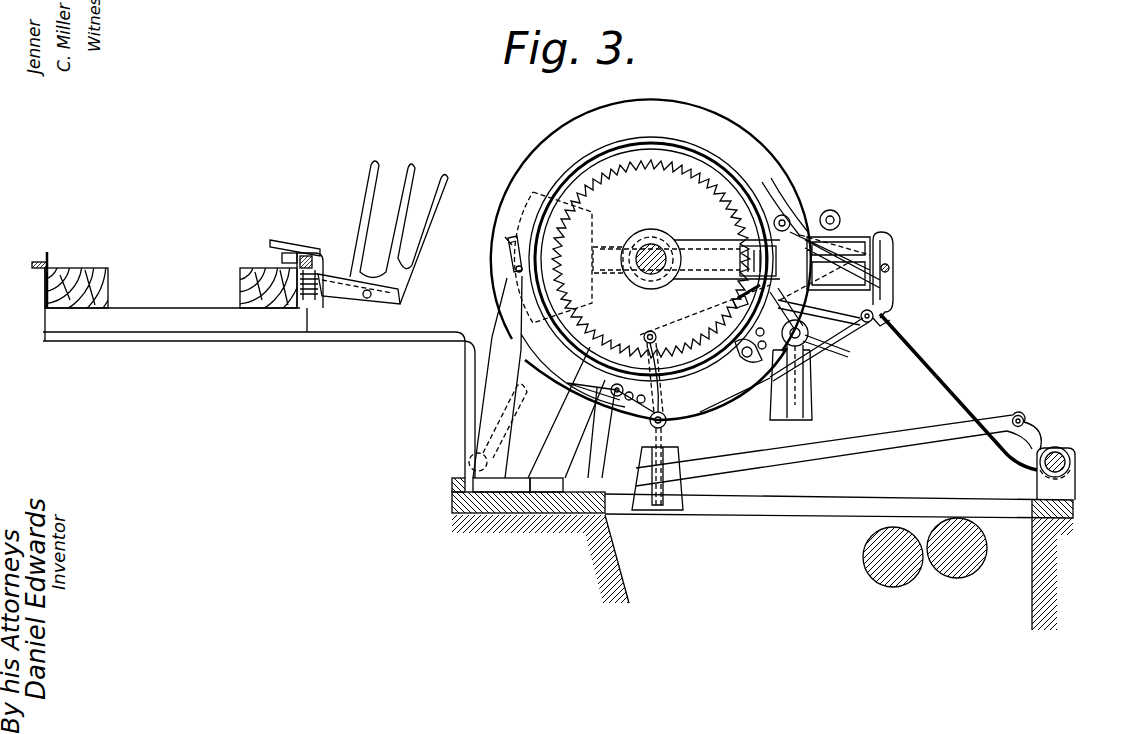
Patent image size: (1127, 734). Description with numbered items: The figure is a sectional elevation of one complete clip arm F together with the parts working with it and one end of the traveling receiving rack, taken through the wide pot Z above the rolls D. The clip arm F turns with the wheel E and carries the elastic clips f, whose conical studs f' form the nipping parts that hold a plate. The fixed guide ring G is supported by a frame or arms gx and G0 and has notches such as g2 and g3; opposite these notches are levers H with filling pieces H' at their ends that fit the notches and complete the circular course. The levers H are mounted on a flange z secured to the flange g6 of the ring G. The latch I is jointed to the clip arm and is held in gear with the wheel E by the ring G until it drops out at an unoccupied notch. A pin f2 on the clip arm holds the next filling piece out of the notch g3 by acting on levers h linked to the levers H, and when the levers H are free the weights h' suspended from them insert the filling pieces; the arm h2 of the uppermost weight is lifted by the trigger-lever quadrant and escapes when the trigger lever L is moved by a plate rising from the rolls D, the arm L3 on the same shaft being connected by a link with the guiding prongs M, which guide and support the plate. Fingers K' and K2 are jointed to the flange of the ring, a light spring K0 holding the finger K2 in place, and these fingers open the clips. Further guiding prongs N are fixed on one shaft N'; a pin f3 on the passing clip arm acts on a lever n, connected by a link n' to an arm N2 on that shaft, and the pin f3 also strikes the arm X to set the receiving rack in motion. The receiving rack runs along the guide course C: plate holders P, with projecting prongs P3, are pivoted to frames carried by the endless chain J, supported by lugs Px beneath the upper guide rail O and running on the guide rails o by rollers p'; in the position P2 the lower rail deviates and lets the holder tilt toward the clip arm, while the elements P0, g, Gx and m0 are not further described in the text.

The guide course C is at (171, 294).
The guide rail o is at (45, 298).
The endless chain J is at (290, 310).
The rollers p' is at (298, 270).
The guide rail O is at (320, 258).
The projecting lugs Px is at (326, 266).
The plate holders P is at (383, 235).
The pivot P0 is at (367, 290).
The plate holder position P2 is at (383, 217).
The projecting prongs P3 is at (420, 216).
The fixed guide ring G is at (651, 225).
The ring g is at (655, 146).
The flange g6 is at (636, 157).
The flange z is at (728, 128).
The wheel E is at (651, 259).
The clip arm F is at (705, 245).
The latch I is at (758, 261).
The finger K2 is at (508, 243).
The light spring K0 is at (516, 270).
The finger K' is at (785, 207).
The arm of the uppermost weight h2 is at (840, 222).
The levers H is at (677, 324).
The filling pieces H' is at (643, 398).
The notch g2 is at (590, 368).
The notch g3 is at (745, 345).
The frame or arms gx is at (497, 377).
The arm X is at (503, 427).
The post Gx is at (566, 412).
The frame or arms G0 is at (652, 472).
The levers h is at (758, 397).
The lever n is at (778, 310).
The pin f2 is at (738, 298).
The pin f3 is at (851, 261).
The clips f is at (892, 275).
The conical studs f' is at (890, 310).
The pivot m0 is at (806, 332).
The trigger lever L is at (825, 349).
The guiding prongs M is at (826, 348).
The arm L3 is at (808, 343).
The weights h' is at (803, 382).
The pot Z is at (762, 554).
The link n' is at (830, 449).
The arm N2 is at (1032, 436).
The shaft N' is at (1072, 473).
The guiding prongs N is at (958, 392).
The rolls D is at (952, 578).